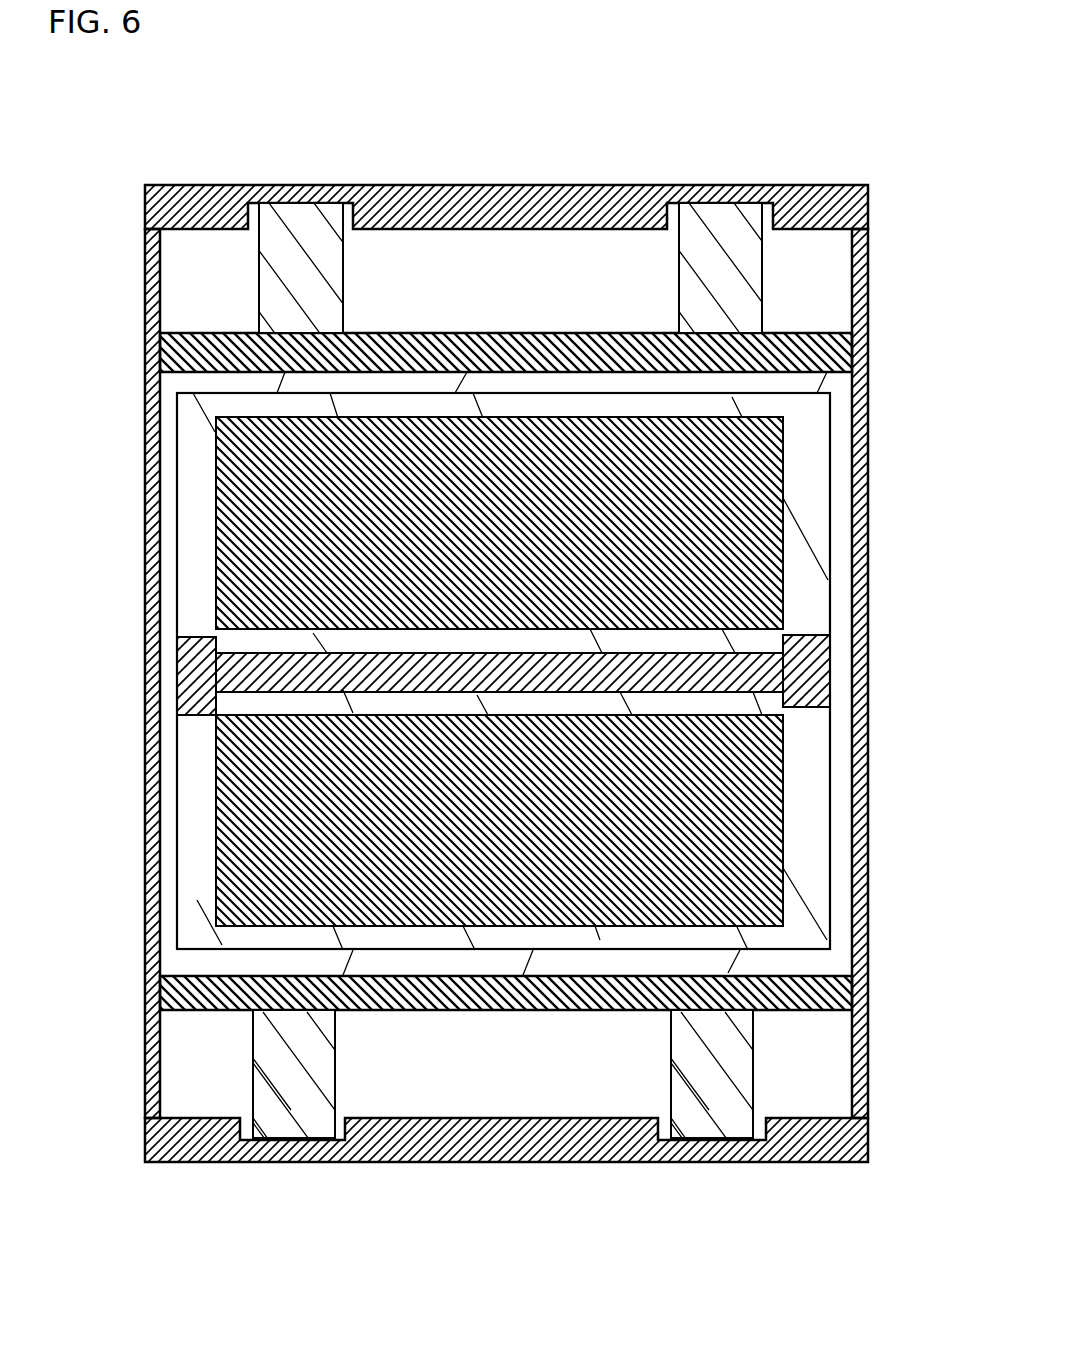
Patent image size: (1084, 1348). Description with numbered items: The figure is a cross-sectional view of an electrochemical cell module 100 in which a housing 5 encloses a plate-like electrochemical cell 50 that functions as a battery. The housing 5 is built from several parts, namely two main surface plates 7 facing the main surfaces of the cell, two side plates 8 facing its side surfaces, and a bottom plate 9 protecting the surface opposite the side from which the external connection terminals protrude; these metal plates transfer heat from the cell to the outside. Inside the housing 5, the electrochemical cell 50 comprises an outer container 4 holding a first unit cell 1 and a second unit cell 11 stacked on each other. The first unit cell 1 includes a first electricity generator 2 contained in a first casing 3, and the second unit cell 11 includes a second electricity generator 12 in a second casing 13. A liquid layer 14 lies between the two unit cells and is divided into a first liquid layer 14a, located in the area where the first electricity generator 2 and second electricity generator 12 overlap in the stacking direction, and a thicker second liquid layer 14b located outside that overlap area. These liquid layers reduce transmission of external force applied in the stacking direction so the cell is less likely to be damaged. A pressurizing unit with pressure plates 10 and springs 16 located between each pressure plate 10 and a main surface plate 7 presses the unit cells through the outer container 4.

The electrochemical cell module 100 is at (167, 147).
The first unit cell 1 is at (528, 405).
The first electricity generator 2 is at (578, 415).
The first casing 3 is at (432, 407).
The outer container 4 is at (229, 387).
The housing 5 is at (510, 674).
The main surface plate 7 is at (630, 185).
The side plate 8 is at (870, 372).
The bottom plate 9 is at (812, 290).
The pressure plate 10 is at (473, 393).
The second unit cell 11 is at (505, 938).
The second electricity generator 12 is at (463, 926).
The second casing 13 is at (557, 940).
The liquid layer 14 is at (812, 683).
The first liquid layer 14a is at (343, 690).
The second liquid layer 14b is at (193, 678).
The spring 16 is at (300, 228).
The electrochemical cell 50 is at (840, 612).